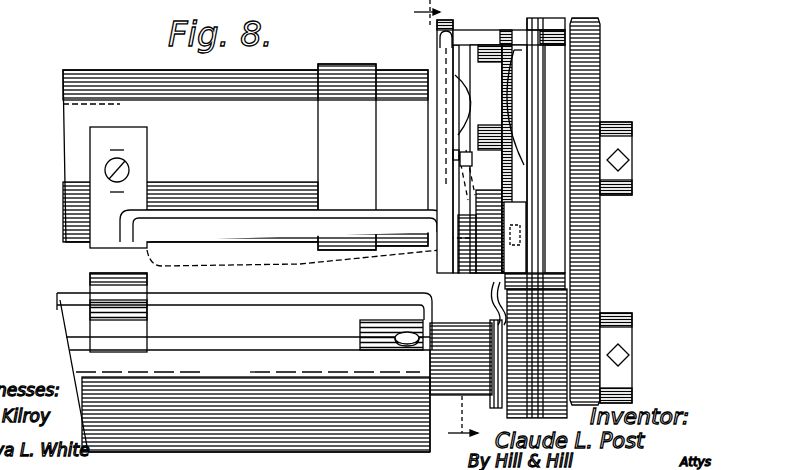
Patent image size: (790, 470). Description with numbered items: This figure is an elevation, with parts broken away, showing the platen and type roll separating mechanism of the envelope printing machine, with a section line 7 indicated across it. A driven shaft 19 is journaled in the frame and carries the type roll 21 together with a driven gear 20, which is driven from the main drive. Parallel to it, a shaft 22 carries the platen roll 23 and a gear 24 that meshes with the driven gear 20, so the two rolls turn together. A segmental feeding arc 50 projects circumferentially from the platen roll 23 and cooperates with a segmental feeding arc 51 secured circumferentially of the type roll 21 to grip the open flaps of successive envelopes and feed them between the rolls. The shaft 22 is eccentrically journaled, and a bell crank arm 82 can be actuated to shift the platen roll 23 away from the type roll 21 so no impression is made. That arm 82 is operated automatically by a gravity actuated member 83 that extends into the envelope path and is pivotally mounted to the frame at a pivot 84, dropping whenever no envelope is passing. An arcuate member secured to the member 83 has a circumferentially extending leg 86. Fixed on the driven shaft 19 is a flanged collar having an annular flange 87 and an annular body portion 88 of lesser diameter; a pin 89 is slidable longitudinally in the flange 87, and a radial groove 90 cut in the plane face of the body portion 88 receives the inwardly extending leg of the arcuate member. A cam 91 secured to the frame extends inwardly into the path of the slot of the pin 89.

The section line 7- 7 is at (438, 228).
The driven shaft 19 is at (453, 165).
The driven gear 20 is at (600, 229).
The type roll 21 is at (268, 102).
The shaft 22 is at (453, 324).
The platen roll 23 is at (215, 316).
The gear 24 is at (600, 288).
The segmental feeding arc 50 is at (142, 293).
The segmental feeding arc 51 is at (133, 171).
The arm 82 is at (493, 286).
The gravity actuated member 83 is at (206, 213).
The pivot 84 is at (445, 38).
The circumferentially extending leg 86 is at (452, 252).
The annular flange 87 is at (490, 46).
The annular body portion 88 is at (474, 50).
The pin 89 is at (462, 161).
The radial groove 90 is at (452, 88).
The cam 91 is at (517, 91).